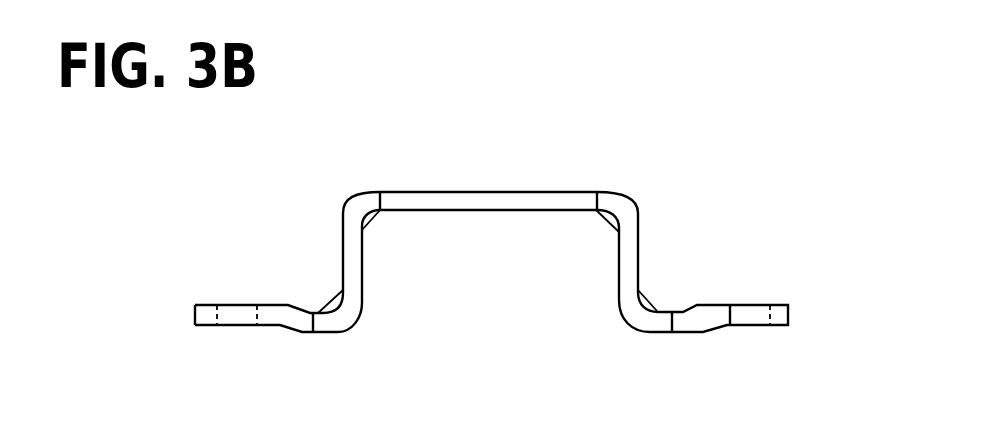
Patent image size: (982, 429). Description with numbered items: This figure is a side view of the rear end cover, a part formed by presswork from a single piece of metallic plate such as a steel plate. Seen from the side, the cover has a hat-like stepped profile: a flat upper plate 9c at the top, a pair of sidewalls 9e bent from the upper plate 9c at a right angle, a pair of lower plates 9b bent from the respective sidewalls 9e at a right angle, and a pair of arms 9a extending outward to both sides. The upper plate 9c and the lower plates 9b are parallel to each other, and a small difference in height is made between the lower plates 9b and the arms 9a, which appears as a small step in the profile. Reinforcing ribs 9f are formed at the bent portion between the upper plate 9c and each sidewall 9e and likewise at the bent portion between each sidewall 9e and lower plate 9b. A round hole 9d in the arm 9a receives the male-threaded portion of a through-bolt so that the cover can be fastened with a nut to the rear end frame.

The arm 9a is at (780, 334).
The lower plate 9b is at (659, 338).
The upper plate 9c is at (555, 187).
The round hole 9d is at (757, 303).
The sidewall 9e is at (350, 255).
The reinforcing rib 9f is at (648, 300).